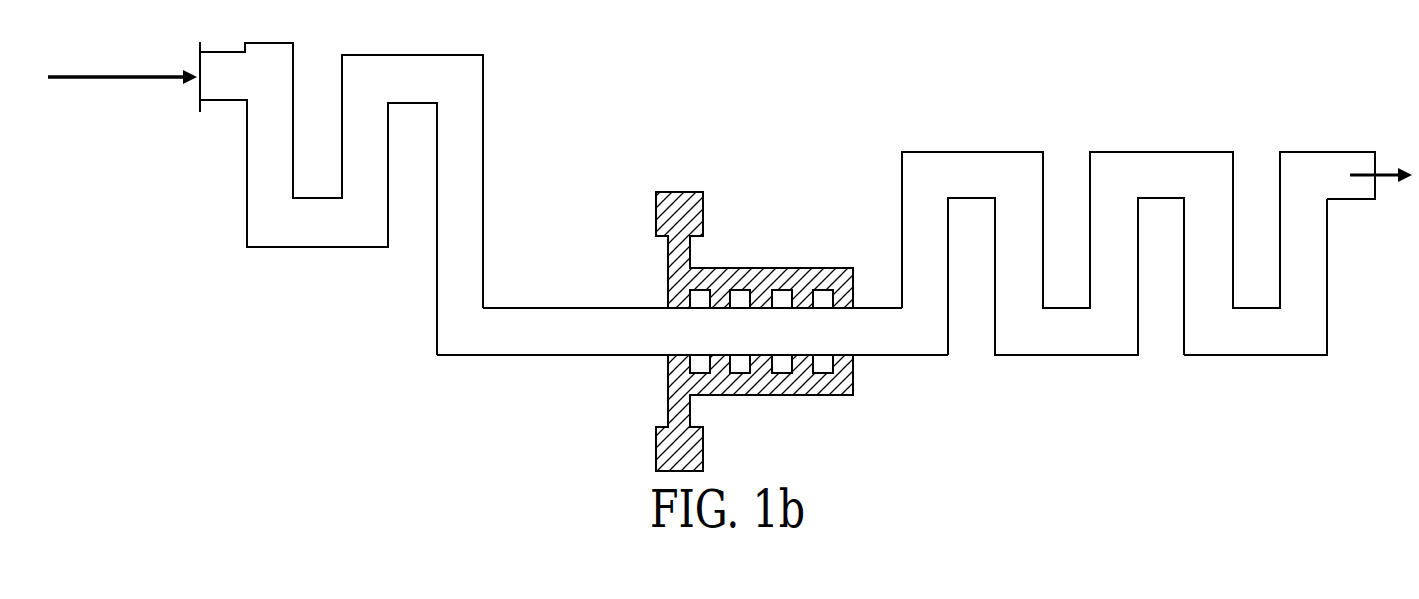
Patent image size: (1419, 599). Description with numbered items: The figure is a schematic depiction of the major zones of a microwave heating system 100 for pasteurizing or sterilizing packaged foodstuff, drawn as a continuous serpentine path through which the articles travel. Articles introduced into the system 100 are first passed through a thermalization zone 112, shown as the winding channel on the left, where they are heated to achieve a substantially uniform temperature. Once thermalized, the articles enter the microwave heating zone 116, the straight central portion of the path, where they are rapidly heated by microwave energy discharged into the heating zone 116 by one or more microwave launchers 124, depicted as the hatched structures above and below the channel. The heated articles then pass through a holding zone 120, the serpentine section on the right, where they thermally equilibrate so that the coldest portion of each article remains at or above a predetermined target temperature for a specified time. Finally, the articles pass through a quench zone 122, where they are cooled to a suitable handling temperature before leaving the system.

The microwave heating system 100 is at (1290, 70).
The thermalization zone 112 is at (507, 80).
The microwave heating zone 116 is at (632, 370).
The holding zone 120 is at (973, 128).
The quench zone 122 is at (1290, 370).
The microwave launchers 124 is at (860, 285).